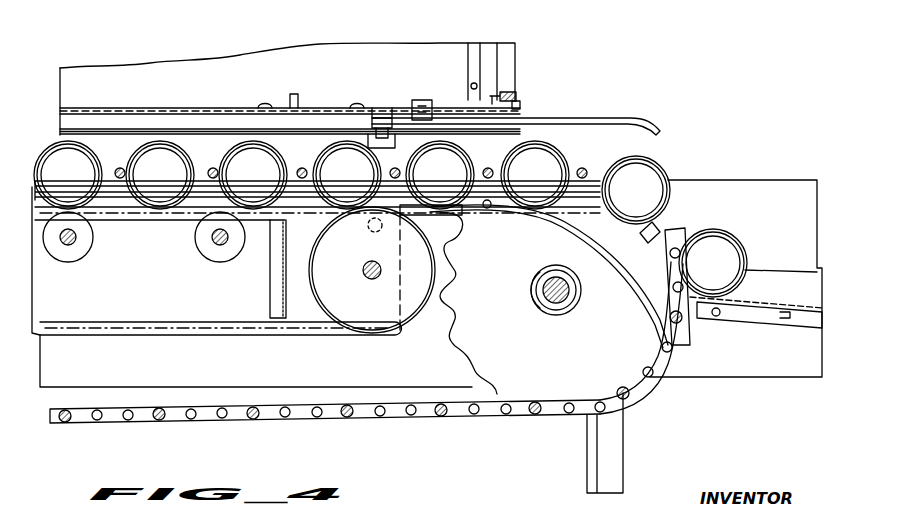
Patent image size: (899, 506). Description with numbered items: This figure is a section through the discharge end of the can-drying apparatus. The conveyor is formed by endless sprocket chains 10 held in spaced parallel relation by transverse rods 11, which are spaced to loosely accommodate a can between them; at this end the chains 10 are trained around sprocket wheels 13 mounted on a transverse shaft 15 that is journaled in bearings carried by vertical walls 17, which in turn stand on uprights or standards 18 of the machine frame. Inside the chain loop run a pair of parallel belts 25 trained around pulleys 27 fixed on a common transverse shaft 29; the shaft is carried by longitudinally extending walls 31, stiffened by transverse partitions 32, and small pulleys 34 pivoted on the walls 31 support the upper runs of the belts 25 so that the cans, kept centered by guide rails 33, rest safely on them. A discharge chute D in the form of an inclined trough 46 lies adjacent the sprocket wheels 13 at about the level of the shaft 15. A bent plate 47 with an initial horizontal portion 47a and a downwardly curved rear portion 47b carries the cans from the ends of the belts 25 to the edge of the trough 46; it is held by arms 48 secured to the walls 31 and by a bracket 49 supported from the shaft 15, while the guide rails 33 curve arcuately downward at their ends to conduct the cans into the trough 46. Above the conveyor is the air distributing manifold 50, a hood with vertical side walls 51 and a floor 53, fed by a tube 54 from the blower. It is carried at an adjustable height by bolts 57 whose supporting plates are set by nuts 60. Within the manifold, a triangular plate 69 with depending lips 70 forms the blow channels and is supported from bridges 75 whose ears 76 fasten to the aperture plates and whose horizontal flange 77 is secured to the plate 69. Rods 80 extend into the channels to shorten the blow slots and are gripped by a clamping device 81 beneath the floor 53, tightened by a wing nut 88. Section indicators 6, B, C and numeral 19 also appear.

The air distributing manifold 50 is at (371, 53).
The vertical side walls 51 is at (408, 67).
The tube 54 is at (508, 66).
The floor 53 is at (503, 96).
The triangular plate 69 is at (97, 108).
The depending lips 70 is at (236, 114).
The ears 76 is at (270, 102).
The braces or bridges 75 is at (299, 100).
The horizontal flange 77 is at (302, 106).
The clamping device 81 is at (428, 100).
The nuts 60 is at (376, 116).
The bolts 57 is at (380, 136).
The wing nut 88 is at (440, 175).
The rods 80 is at (620, 119).
The can 19 is at (296, 160).
The can at transfer station B is at (650, 165).
The guide rails 33 is at (122, 180).
The small pulleys 34 is at (200, 238).
The walls 31 is at (140, 289).
The section line 6- 6 is at (215, 84).
The transverse partitions 32 is at (272, 284).
The parallel belts 25 is at (268, 333).
The pulleys 27 is at (380, 330).
The transverse shaft 29 is at (366, 280).
The arms 48 is at (410, 213).
The initial horizontal portion 47a is at (487, 200).
The bent plate 47 is at (532, 216).
The bracket 49 is at (578, 272).
The transverse shaft 15 is at (548, 314).
The downwardly curved rear portion 47b is at (652, 260).
The discharge chute D is at (756, 312).
The inclined trough 46 is at (782, 320).
The sprocket wheels 13 is at (638, 372).
The vertical walls 17 is at (165, 378).
The endless sprocket chains 10 is at (397, 420).
The transverse rods 11 is at (128, 131).
The uprights or standards 18 is at (588, 462).
The loading section C is at (242, 42).